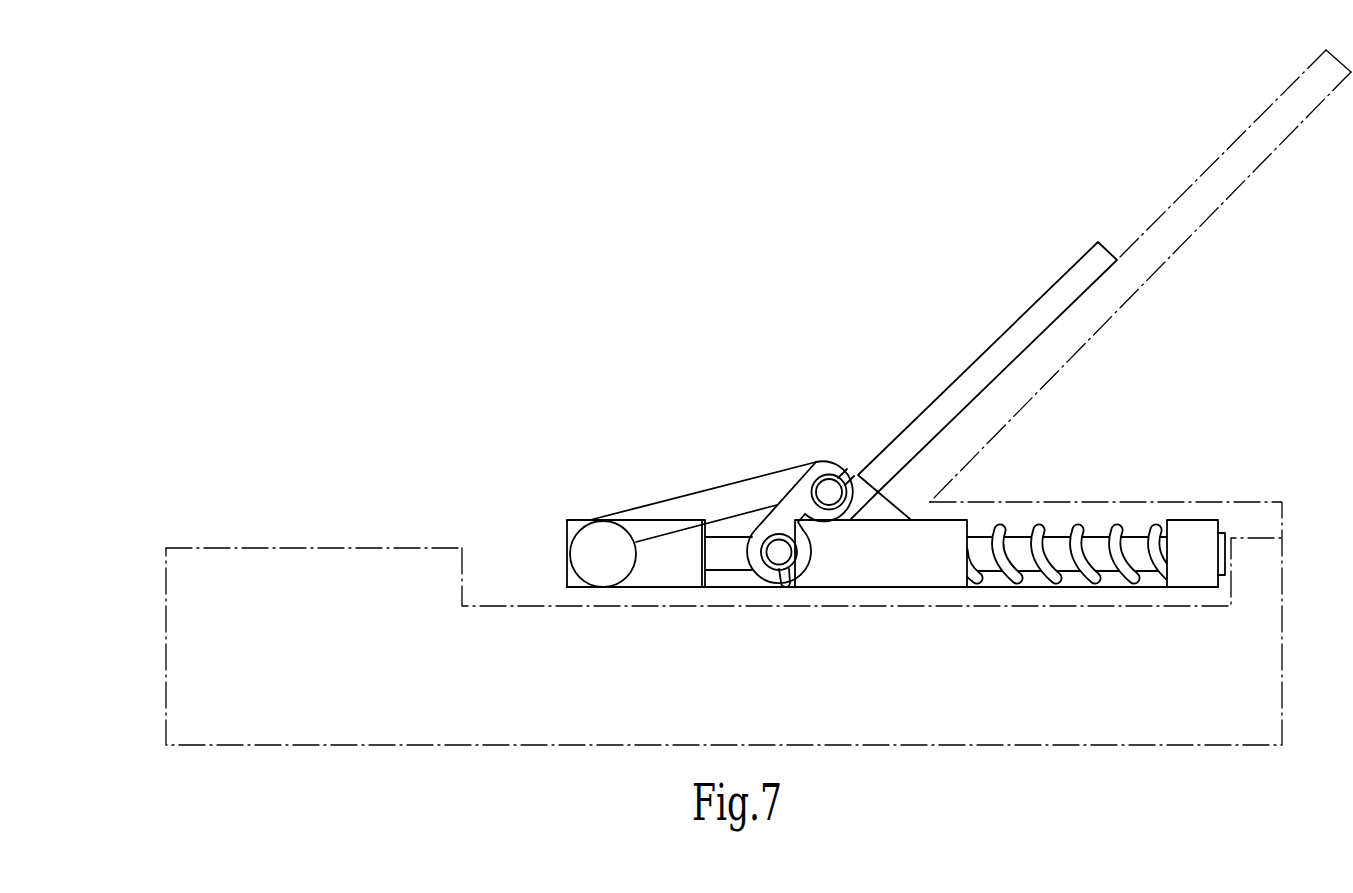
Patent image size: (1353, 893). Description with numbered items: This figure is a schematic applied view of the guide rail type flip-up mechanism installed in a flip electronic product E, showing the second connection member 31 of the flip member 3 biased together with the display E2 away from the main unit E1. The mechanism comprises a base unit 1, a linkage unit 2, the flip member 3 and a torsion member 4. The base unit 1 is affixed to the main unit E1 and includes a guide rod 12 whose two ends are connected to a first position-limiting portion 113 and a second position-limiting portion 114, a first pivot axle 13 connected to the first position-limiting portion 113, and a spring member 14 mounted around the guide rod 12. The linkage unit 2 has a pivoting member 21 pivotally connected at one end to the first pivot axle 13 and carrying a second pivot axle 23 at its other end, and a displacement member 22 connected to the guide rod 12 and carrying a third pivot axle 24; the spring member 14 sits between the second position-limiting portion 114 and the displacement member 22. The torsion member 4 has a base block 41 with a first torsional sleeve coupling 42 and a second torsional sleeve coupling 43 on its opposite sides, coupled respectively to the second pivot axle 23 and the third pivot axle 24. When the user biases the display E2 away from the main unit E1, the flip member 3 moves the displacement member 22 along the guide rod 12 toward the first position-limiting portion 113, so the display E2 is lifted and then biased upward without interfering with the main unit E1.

The base unit 1 is at (1231, 517).
The second position-limiting portion 114 is at (1213, 533).
The first position-limiting portion 113 is at (573, 527).
The guide rod 12 is at (1027, 548).
The first pivot axle 13 is at (581, 551).
The spring member 14 is at (1110, 545).
The linkage unit 2 is at (864, 562).
The pivoting member 21 is at (658, 512).
The displacement member 22 is at (880, 577).
The second pivot axle 23 is at (825, 486).
The third pivot axle 24 is at (780, 552).
The flip member 3 is at (983, 381).
The second connection member 31 is at (963, 373).
The torsion member 4 is at (773, 518).
The base block 41 is at (790, 507).
The first torsional sleeve coupling 42 is at (828, 470).
The second torsional sleeve coupling 43 is at (765, 573).
The flip electronic product E is at (258, 541).
The main unit E1 is at (375, 548).
The display E2 is at (1168, 260).